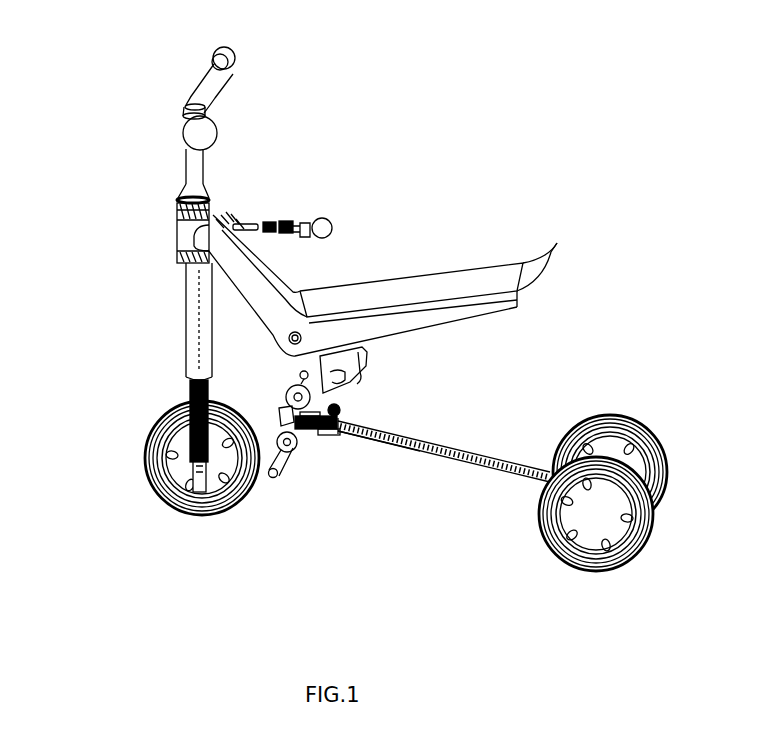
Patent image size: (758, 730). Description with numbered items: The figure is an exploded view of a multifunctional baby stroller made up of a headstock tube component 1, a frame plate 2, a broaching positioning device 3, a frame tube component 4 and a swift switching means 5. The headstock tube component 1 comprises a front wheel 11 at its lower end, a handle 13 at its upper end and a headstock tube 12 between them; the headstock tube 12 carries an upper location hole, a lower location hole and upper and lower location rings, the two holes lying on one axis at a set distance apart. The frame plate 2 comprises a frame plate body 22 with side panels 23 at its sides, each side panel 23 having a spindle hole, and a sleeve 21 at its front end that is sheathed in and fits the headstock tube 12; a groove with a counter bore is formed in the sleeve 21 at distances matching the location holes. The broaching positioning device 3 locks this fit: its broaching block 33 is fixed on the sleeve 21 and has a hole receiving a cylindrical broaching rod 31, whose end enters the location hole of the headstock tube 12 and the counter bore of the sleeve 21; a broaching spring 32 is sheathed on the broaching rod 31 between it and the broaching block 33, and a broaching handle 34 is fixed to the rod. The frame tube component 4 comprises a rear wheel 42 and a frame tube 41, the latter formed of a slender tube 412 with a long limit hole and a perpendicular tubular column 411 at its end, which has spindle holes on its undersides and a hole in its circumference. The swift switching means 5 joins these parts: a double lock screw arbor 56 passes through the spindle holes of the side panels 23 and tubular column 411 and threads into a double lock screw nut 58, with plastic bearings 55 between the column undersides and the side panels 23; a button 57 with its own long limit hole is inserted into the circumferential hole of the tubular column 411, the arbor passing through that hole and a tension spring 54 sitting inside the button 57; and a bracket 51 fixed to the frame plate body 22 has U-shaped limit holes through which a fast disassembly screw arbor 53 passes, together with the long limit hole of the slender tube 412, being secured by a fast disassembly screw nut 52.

The headstock tube component 1 is at (193, 295).
The front wheel 11 is at (153, 427).
The headstock tube 12 is at (193, 350).
The handle 13 is at (190, 80).
The frame plate 2 is at (218, 212).
The sleeve 21 is at (178, 205).
The frame plate body 22 is at (388, 294).
The side panel 23 is at (413, 331).
The broaching positioning device 3 is at (332, 221).
The broaching rod 31 is at (243, 226).
The broaching spring 32 is at (274, 221).
The broaching block 33 is at (291, 219).
The broaching handle 34 is at (320, 226).
The frame tube component 4 is at (383, 447).
The frame tube 41 is at (498, 447).
The tubular column 411 is at (343, 415).
The slender tube 412 is at (413, 443).
The rear wheel 42 is at (640, 423).
The swift switching means 5 is at (278, 408).
The bracket 51 is at (365, 360).
The fast disassembly screw nut 52 is at (360, 443).
The fast disassembly screw arbor 53 is at (343, 443).
The tension spring 54 is at (310, 430).
The plastic bearing 55 is at (292, 449).
The double lock screw arbor 56 is at (275, 475).
The button 57 is at (280, 425).
The double lock screw nut 58 is at (303, 372).